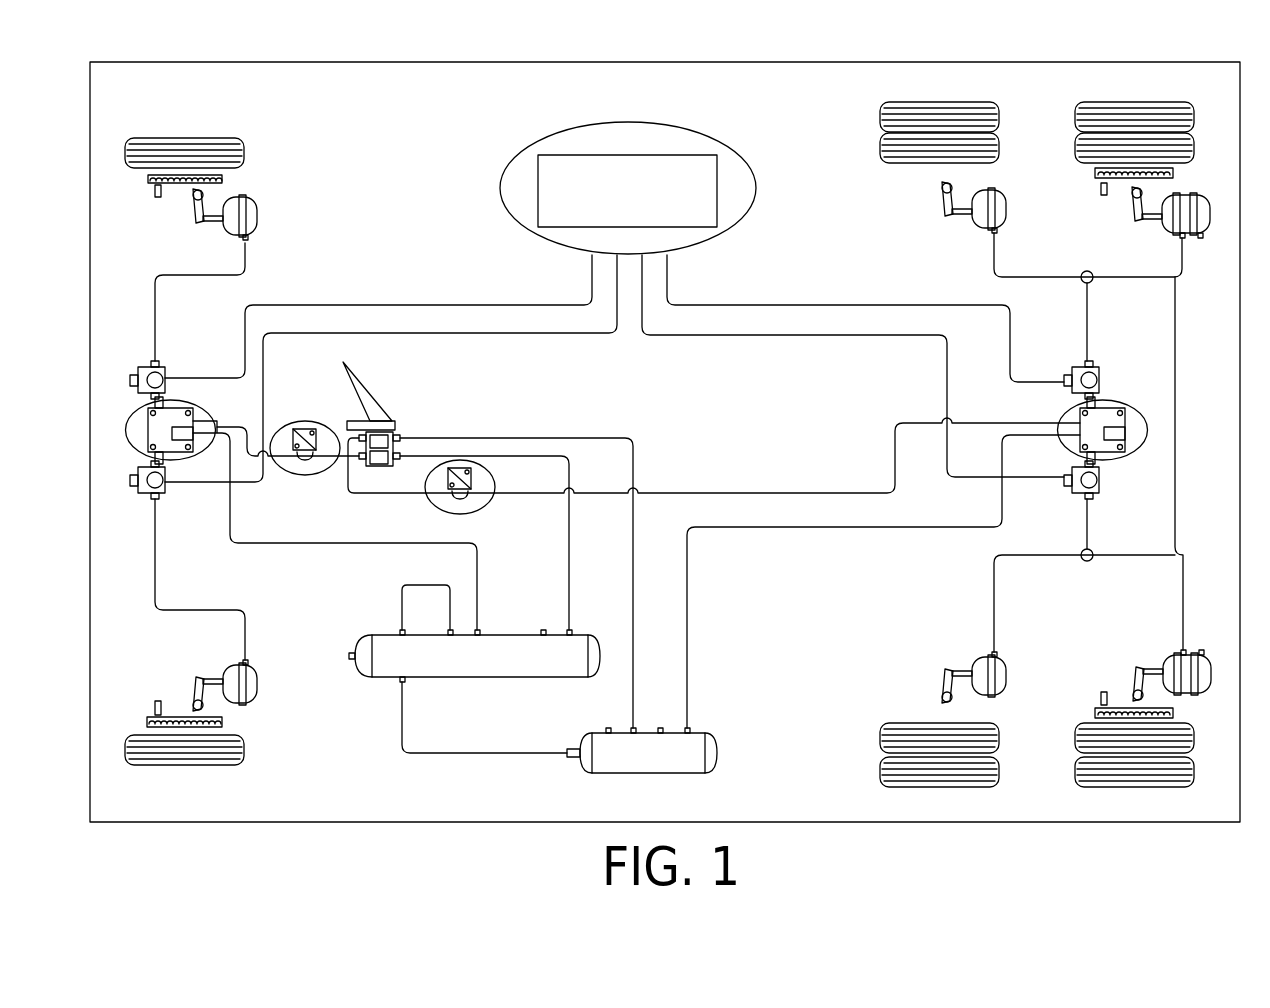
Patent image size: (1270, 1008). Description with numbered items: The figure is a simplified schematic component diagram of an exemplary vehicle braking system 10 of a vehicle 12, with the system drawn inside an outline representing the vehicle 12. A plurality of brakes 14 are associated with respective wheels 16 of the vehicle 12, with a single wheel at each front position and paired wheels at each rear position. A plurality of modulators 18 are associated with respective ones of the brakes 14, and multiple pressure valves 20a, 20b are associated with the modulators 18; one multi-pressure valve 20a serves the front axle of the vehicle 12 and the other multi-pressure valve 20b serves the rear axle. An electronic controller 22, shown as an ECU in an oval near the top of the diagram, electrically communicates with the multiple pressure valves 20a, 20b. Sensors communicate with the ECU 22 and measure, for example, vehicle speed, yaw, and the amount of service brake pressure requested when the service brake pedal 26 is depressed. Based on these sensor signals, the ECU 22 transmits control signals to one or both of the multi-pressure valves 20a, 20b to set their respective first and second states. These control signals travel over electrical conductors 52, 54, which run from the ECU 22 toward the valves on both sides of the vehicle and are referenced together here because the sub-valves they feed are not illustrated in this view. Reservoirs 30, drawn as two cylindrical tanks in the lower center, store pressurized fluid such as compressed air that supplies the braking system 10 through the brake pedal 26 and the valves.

The vehicle braking system 10 is at (838, 601).
The vehicle 12 is at (703, 62).
The brakes 14 is at (258, 210).
The wheels 16 is at (223, 140).
The modulators 18 is at (166, 366).
The multi-pressure valve 20a is at (140, 425).
The multi-pressure valve 20b is at (1110, 398).
The electronic controller 22 is at (640, 216).
The service brake pedal 26 is at (385, 392).
The reservoirs 30 is at (493, 678).
The electrical conductor 52 is at (455, 305).
The electrical conductor 54 is at (506, 340).